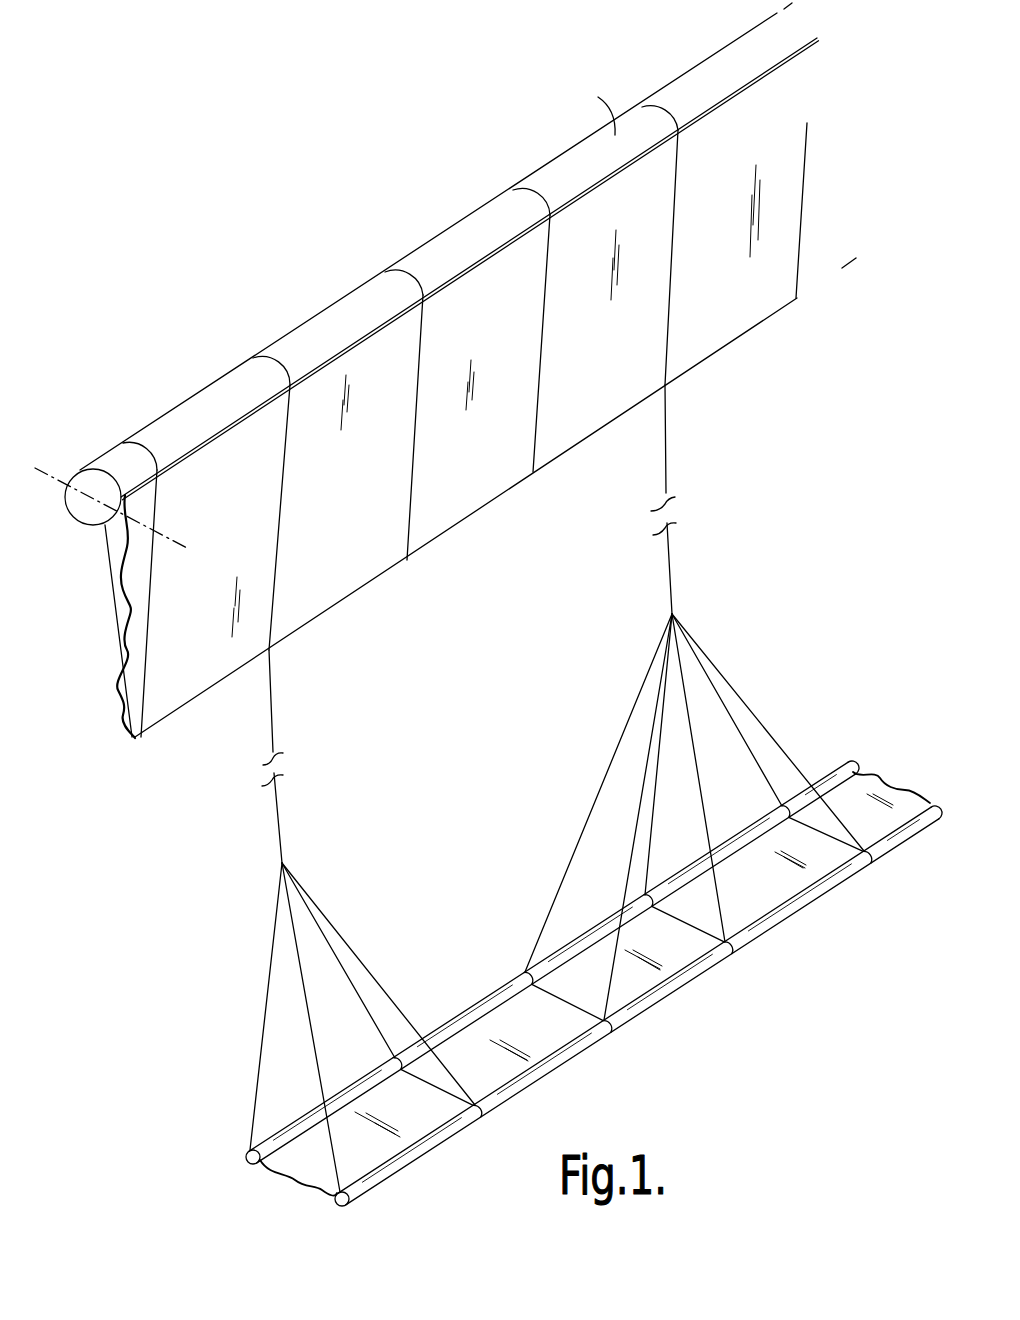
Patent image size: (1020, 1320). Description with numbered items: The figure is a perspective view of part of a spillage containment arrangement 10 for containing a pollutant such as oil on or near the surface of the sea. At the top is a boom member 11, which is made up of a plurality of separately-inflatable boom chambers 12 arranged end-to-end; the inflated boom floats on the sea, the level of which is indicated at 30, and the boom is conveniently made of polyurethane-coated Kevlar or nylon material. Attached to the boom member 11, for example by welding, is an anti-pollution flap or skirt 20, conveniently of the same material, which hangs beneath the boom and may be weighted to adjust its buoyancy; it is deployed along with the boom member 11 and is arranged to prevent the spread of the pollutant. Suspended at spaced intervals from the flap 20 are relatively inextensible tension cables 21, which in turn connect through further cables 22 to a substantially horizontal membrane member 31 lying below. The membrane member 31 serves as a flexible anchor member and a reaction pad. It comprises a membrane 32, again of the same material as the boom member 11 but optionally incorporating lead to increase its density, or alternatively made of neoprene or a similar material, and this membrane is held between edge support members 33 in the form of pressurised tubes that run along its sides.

The spillage containment arrangement 10 is at (381, 236).
The boom member 11 is at (474, 222).
The boom chamber 12 is at (683, 88).
The anti-pollution flap or skirt 20 is at (508, 472).
The tension cable 21 is at (273, 735).
The further cable 22 is at (332, 952).
The sea level 30 is at (173, 537).
The membrane member 31 is at (594, 983).
The membrane 32 is at (477, 1037).
The edge support member 33 is at (498, 995).